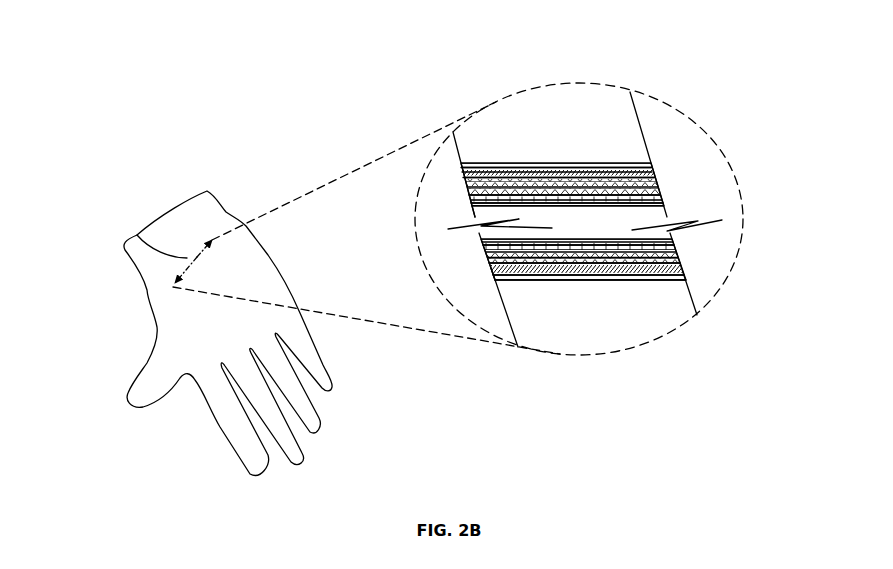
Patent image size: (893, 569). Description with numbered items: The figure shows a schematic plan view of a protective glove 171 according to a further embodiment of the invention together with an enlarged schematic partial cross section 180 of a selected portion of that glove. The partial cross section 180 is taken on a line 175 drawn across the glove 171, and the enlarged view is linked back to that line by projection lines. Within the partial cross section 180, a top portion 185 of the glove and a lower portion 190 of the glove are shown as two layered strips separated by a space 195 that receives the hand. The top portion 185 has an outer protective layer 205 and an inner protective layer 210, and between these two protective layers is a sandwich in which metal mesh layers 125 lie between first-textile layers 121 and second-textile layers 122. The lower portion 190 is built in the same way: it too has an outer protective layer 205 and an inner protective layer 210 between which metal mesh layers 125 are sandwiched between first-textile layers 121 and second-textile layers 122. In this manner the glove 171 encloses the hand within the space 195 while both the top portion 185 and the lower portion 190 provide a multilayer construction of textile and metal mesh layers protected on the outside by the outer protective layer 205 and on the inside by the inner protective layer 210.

The protective glove 171 is at (145, 303).
The line 175 is at (137, 235).
The partial cross section 180 is at (574, 357).
The outer protective layer 205 is at (538, 167).
The first-textile layers 121 is at (657, 177).
The metal mesh layers 125 is at (665, 182).
The second-textile layers 122 is at (660, 197).
The inner protective layer 210 is at (670, 205).
The top portion 185 is at (467, 188).
The space 195 is at (473, 218).
The lower portion 190 is at (483, 272).